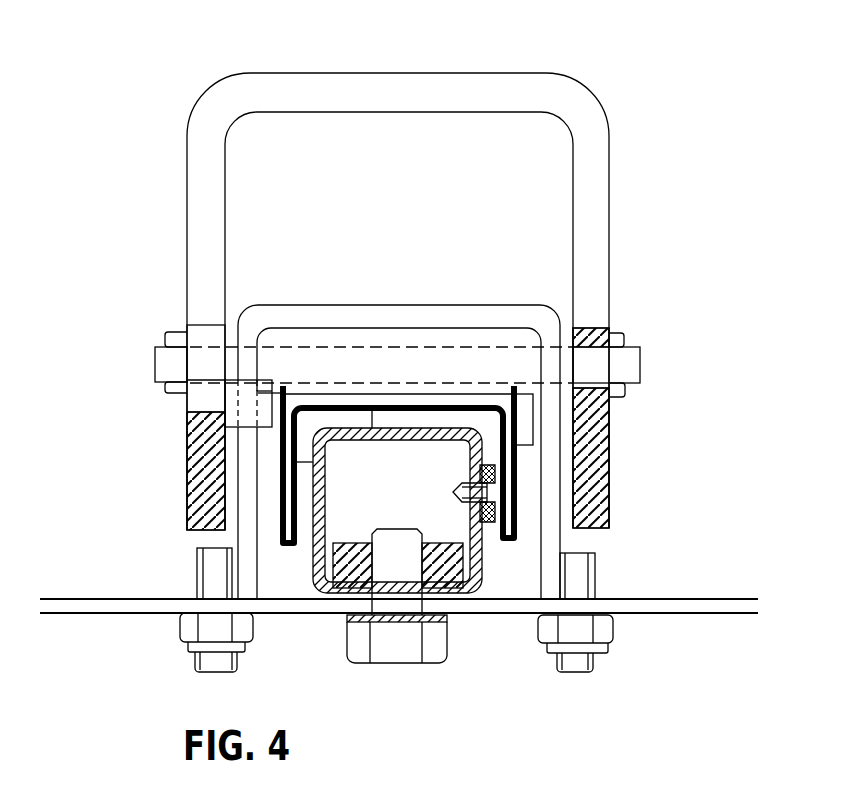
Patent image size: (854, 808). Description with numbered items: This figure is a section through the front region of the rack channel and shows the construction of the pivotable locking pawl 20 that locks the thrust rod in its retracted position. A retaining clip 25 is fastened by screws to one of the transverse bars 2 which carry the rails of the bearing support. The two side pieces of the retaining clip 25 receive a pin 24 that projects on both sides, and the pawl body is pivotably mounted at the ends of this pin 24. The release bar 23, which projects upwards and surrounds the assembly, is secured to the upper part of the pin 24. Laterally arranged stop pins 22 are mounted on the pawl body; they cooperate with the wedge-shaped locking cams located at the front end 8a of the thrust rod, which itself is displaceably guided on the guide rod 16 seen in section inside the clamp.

The transverse bar 2 is at (663, 608).
The front end of the thrust rod 8a is at (513, 503).
The guide rod 16 is at (473, 578).
The locking pawl 20 is at (160, 300).
The stop pin 22 is at (248, 410).
The release bar 23 is at (453, 82).
The pin 24 is at (632, 358).
The retaining clip 25 is at (432, 316).